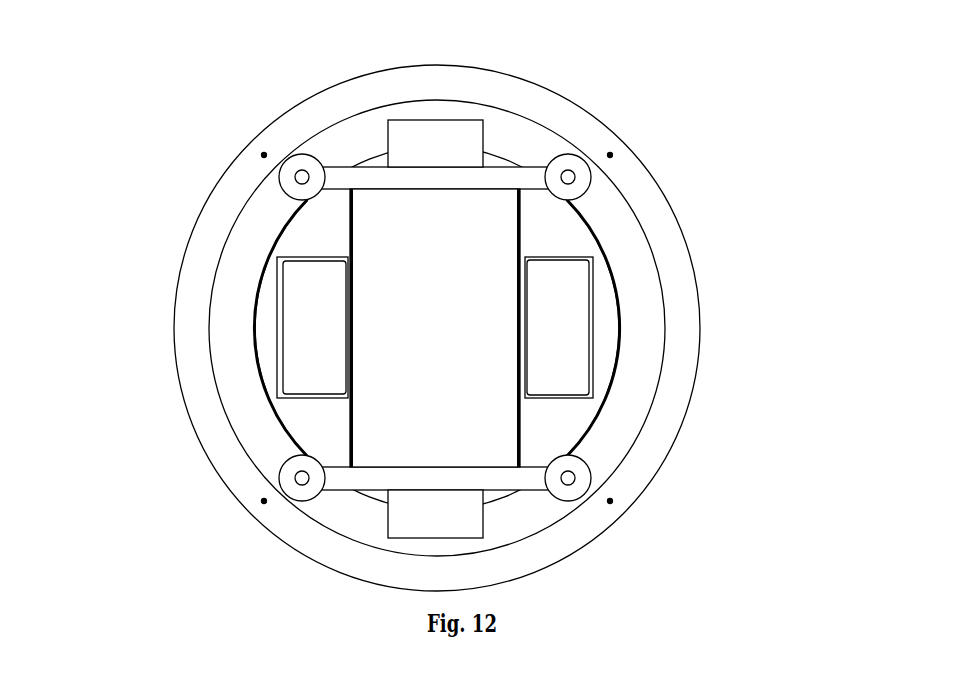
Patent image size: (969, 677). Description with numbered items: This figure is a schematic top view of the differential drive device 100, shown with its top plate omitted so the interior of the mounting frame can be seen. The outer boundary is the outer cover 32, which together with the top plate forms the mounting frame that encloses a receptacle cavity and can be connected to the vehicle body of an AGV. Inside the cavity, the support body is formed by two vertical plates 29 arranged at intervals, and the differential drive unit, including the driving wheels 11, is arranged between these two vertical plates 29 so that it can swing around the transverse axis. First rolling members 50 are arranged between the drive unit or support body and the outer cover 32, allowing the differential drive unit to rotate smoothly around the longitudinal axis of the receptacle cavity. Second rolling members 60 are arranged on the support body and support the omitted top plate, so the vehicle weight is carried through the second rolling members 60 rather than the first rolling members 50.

The differential drive device 100 is at (460, 300).
The outer cover 32 is at (665, 417).
The vertical plate 29 is at (343, 175).
The second rolling member 60 is at (461, 140).
The driving wheel 11 is at (570, 348).
The first rolling member 50 is at (587, 170).